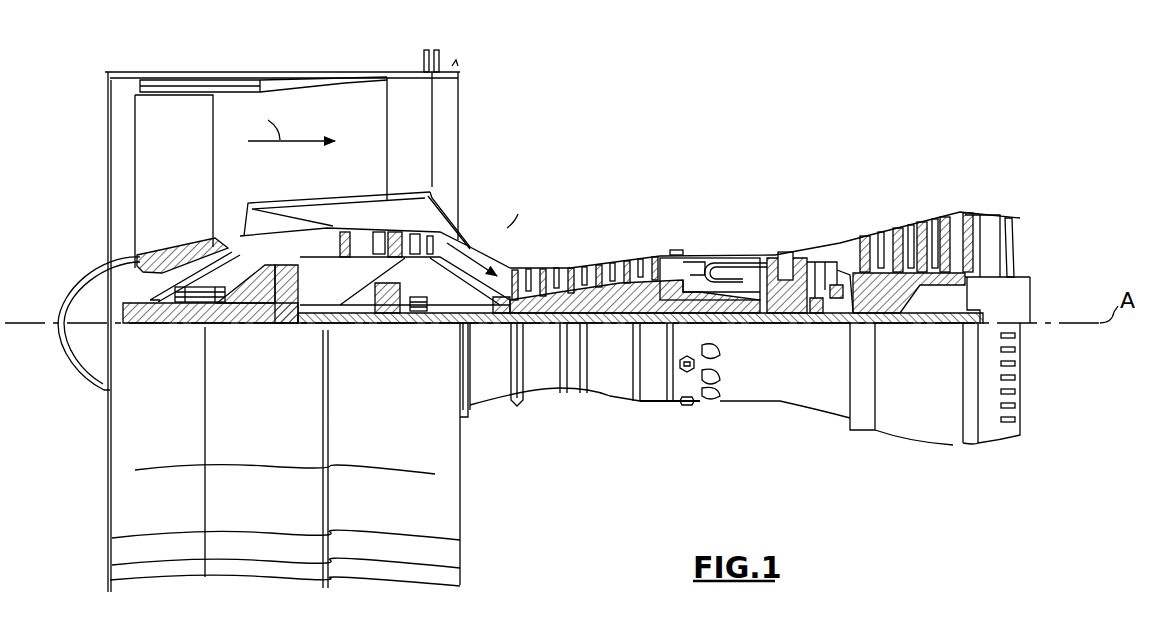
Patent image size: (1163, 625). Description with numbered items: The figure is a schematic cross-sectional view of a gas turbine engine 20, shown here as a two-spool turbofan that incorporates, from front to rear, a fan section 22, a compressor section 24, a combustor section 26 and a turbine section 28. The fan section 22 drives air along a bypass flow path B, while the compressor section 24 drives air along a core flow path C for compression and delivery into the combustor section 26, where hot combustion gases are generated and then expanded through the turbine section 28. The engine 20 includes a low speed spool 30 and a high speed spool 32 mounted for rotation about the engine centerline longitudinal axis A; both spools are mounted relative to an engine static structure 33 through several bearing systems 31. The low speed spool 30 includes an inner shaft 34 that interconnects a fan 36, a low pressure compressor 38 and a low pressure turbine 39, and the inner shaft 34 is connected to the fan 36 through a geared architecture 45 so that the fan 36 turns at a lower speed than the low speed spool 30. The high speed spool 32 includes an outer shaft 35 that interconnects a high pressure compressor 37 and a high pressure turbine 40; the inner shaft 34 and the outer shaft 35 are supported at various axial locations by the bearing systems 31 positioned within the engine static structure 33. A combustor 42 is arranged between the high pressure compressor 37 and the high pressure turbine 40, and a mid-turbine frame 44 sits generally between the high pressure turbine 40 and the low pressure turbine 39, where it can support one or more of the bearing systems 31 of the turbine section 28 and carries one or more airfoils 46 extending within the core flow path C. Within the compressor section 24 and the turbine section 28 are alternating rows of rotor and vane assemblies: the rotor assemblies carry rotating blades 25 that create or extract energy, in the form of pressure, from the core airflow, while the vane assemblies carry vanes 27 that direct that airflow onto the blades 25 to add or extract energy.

The gas turbine engine 20 is at (735, 107).
The fan section 22 is at (215, 58).
The compressor section 24 is at (515, 236).
The blades 25 is at (347, 232).
The combustor section 26 is at (724, 225).
The vanes 27 is at (378, 233).
The turbine section 28 is at (866, 200).
The low speed spool 30 is at (613, 333).
The bearing systems 31 is at (198, 300).
The high speed spool 32 is at (657, 267).
The engine static structure 33 is at (652, 408).
The inner shaft 34 is at (478, 327).
The outer shaft 35 is at (740, 302).
The fan 36 is at (188, 186).
The high pressure compressor 37 is at (587, 297).
The low pressure compressor 38 is at (434, 196).
The low pressure turbine 39 is at (910, 240).
The high pressure turbine 40 is at (787, 257).
The combustor 42 is at (724, 272).
The mid-turbine frame 44 is at (835, 238).
The geared architecture 45 is at (290, 300).
The airfoils 46 is at (847, 292).